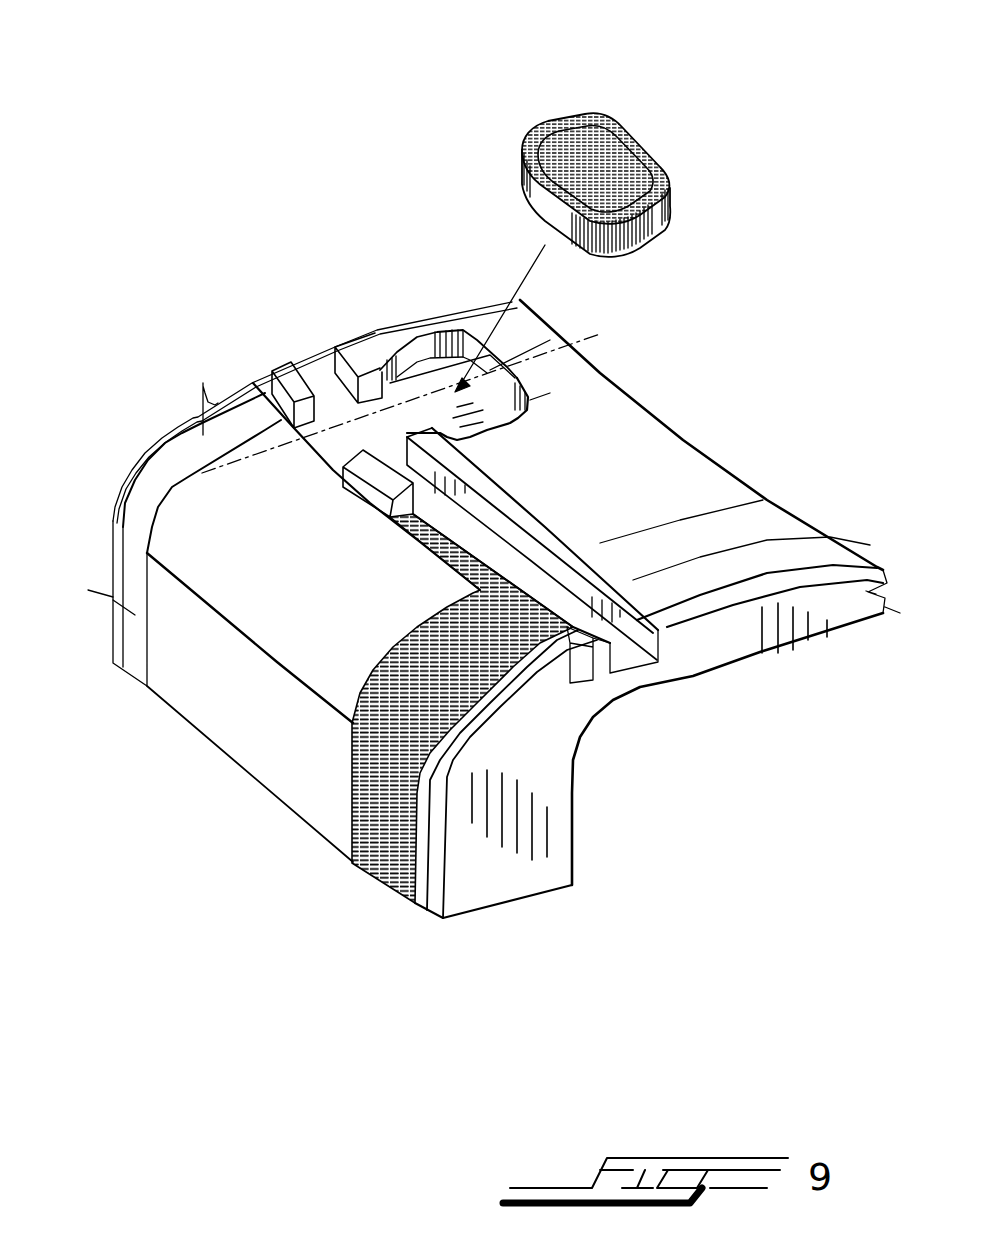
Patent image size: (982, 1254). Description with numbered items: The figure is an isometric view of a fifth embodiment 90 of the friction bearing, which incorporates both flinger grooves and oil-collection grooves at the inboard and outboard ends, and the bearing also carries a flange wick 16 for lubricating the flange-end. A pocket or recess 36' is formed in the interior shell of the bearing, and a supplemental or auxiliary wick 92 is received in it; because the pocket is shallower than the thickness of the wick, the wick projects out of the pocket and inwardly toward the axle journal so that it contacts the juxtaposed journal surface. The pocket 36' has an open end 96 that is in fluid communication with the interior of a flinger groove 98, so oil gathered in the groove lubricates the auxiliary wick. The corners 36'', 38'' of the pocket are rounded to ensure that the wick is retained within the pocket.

The fifth embodiment 90 is at (168, 850).
The flange wick 16 is at (387, 853).
The supplemental or auxiliary wick 92 is at (628, 128).
The open end 96 is at (327, 378).
The flinger groove 98 is at (327, 400).
The corner 38'' is at (462, 321).
The pocket or recess 36' is at (563, 460).
The corner 36'' is at (565, 424).